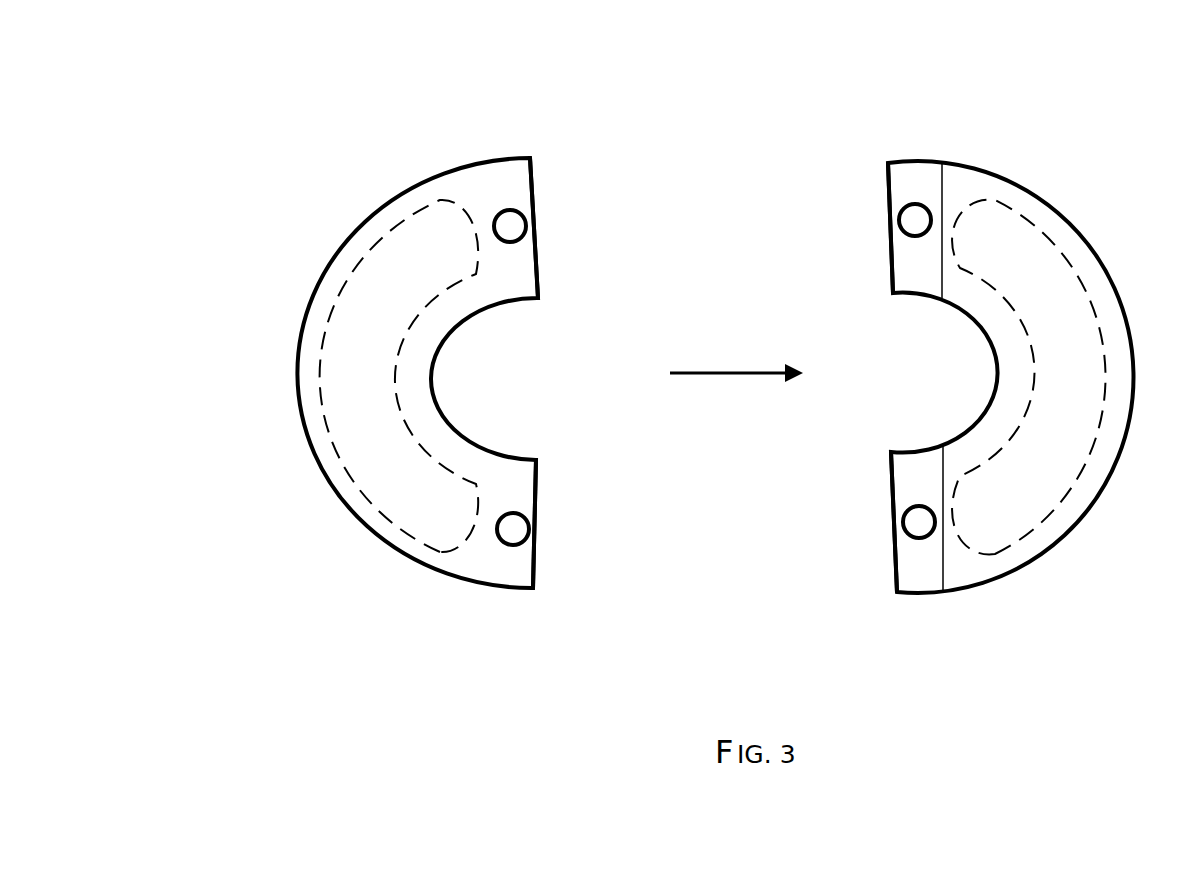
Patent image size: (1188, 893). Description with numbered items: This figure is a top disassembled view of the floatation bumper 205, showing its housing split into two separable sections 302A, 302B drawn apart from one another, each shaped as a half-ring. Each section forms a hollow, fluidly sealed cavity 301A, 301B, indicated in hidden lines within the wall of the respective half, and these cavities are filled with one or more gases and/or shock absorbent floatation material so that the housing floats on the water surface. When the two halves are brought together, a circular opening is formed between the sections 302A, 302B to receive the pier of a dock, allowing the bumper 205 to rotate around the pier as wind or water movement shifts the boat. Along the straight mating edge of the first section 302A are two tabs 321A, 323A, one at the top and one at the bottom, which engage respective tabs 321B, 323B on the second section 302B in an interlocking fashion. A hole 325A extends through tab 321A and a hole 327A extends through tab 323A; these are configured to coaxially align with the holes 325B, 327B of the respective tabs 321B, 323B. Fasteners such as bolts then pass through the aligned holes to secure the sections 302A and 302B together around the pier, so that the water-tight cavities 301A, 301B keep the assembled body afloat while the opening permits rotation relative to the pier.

The floatation bumper 205 is at (266, 61).
The section 302A is at (343, 243).
The section 302B is at (1020, 185).
The cavity 301A is at (313, 375).
The cavity 301B is at (1082, 237).
The tab 321A is at (520, 189).
The tab 321B is at (898, 171).
The tab 323A is at (534, 580).
The tab 323B is at (896, 588).
The hole 325A is at (527, 224).
The hole 325B is at (899, 217).
The hole 327A is at (533, 522).
The hole 327B is at (898, 518).